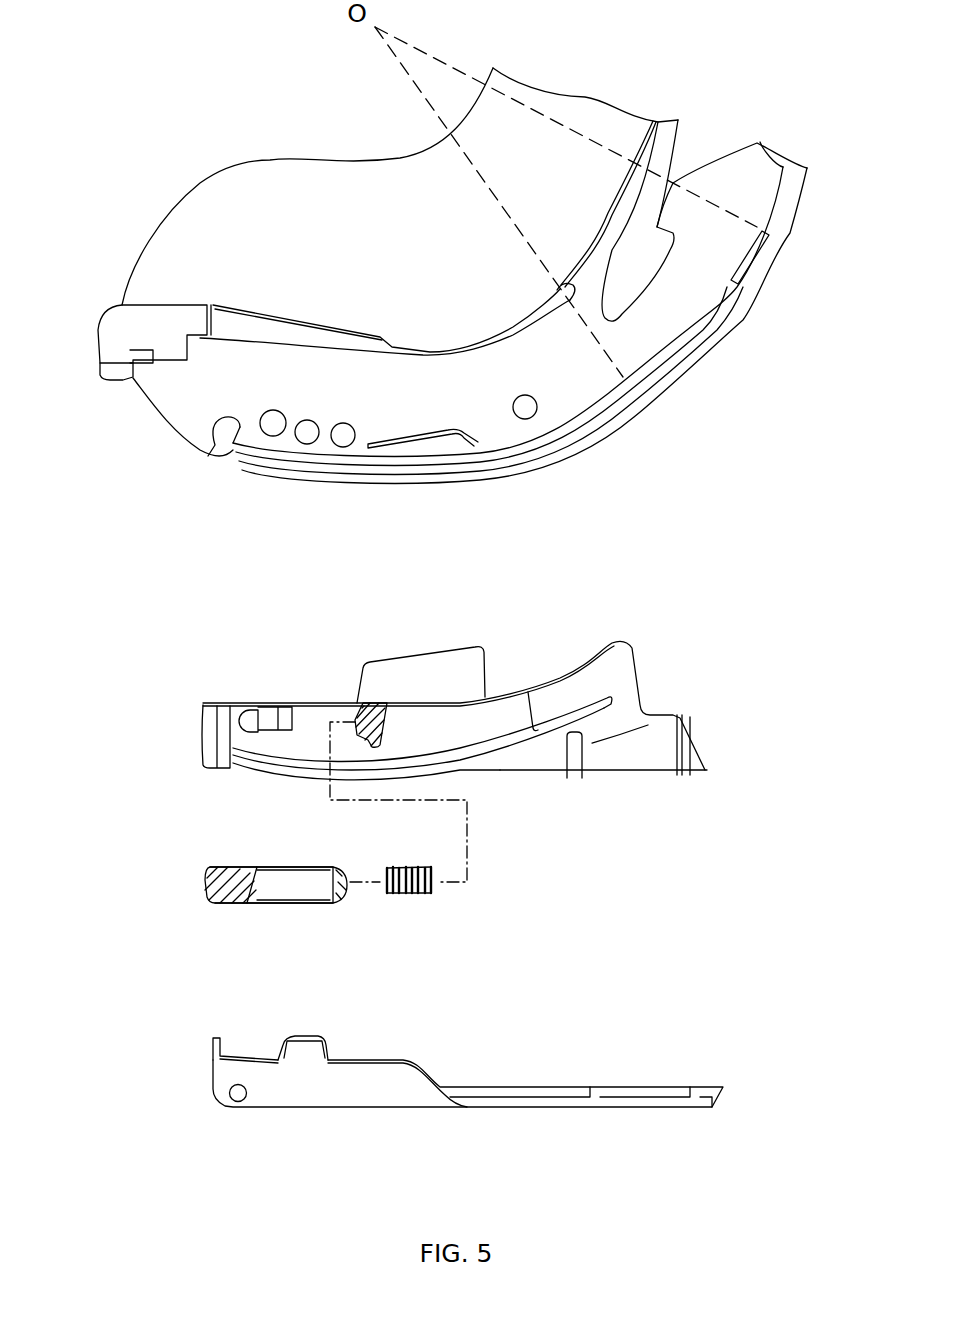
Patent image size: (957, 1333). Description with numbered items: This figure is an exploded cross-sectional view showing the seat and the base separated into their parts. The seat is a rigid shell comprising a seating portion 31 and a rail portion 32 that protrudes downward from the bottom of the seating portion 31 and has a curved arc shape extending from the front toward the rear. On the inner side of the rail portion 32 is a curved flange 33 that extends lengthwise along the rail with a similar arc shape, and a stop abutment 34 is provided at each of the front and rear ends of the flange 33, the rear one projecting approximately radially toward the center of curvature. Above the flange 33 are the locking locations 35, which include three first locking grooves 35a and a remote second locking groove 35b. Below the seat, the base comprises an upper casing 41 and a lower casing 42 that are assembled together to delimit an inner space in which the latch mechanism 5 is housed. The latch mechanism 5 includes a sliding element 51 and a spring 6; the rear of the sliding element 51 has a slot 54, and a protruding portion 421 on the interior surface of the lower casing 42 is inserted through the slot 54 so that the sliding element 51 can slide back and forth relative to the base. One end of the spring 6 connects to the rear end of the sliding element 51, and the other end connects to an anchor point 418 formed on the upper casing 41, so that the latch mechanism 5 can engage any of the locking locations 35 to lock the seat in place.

The seating portion 31 is at (207, 203).
The rail portion 32 is at (172, 408).
The curved flange 33 is at (287, 462).
The stop abutment 34 is at (232, 438).
The locking locations 35 is at (522, 560).
The first locking groove 35a is at (343, 437).
The second locking groove 35b is at (527, 413).
The upper casing 41 is at (640, 668).
The anchor point 418 is at (375, 703).
The lower casing 42 is at (633, 1100).
The protruding portion 421 is at (303, 1035).
The latch mechanism 5 is at (210, 867).
The sliding element 51 is at (210, 895).
The slot 54 is at (277, 888).
The spring 6 is at (430, 887).